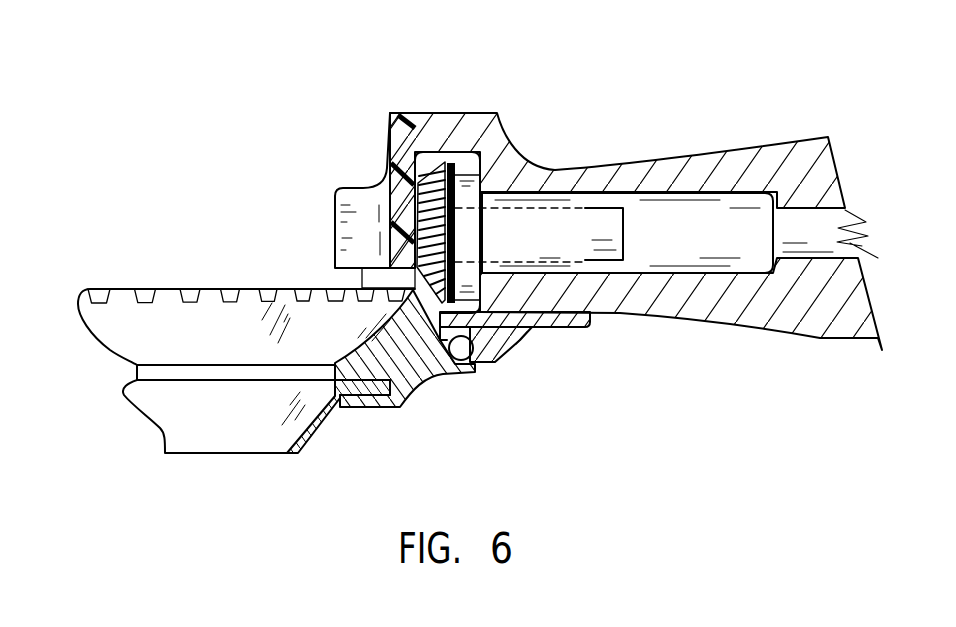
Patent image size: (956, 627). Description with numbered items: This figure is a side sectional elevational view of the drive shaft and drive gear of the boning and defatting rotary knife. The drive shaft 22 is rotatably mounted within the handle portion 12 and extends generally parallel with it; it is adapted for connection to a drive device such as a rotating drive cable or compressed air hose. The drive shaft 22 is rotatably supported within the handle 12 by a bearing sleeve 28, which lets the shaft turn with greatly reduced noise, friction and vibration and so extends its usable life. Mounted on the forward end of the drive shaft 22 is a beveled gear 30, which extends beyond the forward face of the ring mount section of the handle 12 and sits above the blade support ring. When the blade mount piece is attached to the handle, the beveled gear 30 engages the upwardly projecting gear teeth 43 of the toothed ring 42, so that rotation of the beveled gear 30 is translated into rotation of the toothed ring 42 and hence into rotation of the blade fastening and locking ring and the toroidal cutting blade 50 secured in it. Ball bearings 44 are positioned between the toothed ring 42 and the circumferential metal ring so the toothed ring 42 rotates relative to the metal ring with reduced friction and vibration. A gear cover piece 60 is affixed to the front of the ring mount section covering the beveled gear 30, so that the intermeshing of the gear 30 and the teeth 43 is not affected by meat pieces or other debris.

The handle portion 12 is at (702, 163).
The drive shaft 22 is at (603, 227).
The bearing sleeve 28 is at (555, 250).
The beveled gear 30 is at (433, 182).
The toothed ring 42 is at (153, 352).
The gear teeth 43 is at (191, 284).
The ball bearings 44 is at (460, 347).
The toroidal cutting blade 50 is at (313, 430).
The gear cover piece 60 is at (405, 130).